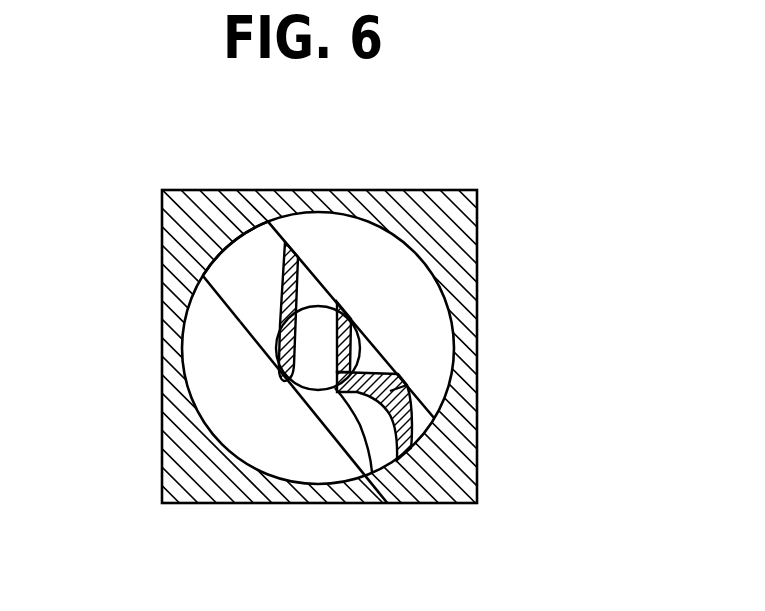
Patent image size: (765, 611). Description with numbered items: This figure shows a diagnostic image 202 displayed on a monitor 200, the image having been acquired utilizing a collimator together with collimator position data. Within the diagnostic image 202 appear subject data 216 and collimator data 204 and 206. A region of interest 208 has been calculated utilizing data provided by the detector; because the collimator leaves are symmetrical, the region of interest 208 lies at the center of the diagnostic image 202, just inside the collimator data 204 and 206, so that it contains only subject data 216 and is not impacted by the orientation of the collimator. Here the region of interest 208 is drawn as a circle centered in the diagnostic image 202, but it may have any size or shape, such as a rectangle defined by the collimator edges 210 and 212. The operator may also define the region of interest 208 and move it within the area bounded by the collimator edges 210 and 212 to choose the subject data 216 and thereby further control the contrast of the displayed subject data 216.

The monitor 200 is at (478, 247).
The diagnostic image 202 is at (427, 450).
The collimator data 204 is at (432, 325).
The collimator data 206 is at (300, 463).
The region of interest 208 is at (380, 487).
The collimator edge 210 is at (282, 228).
The collimator edge 212 is at (211, 292).
The subject data 216 is at (245, 257).